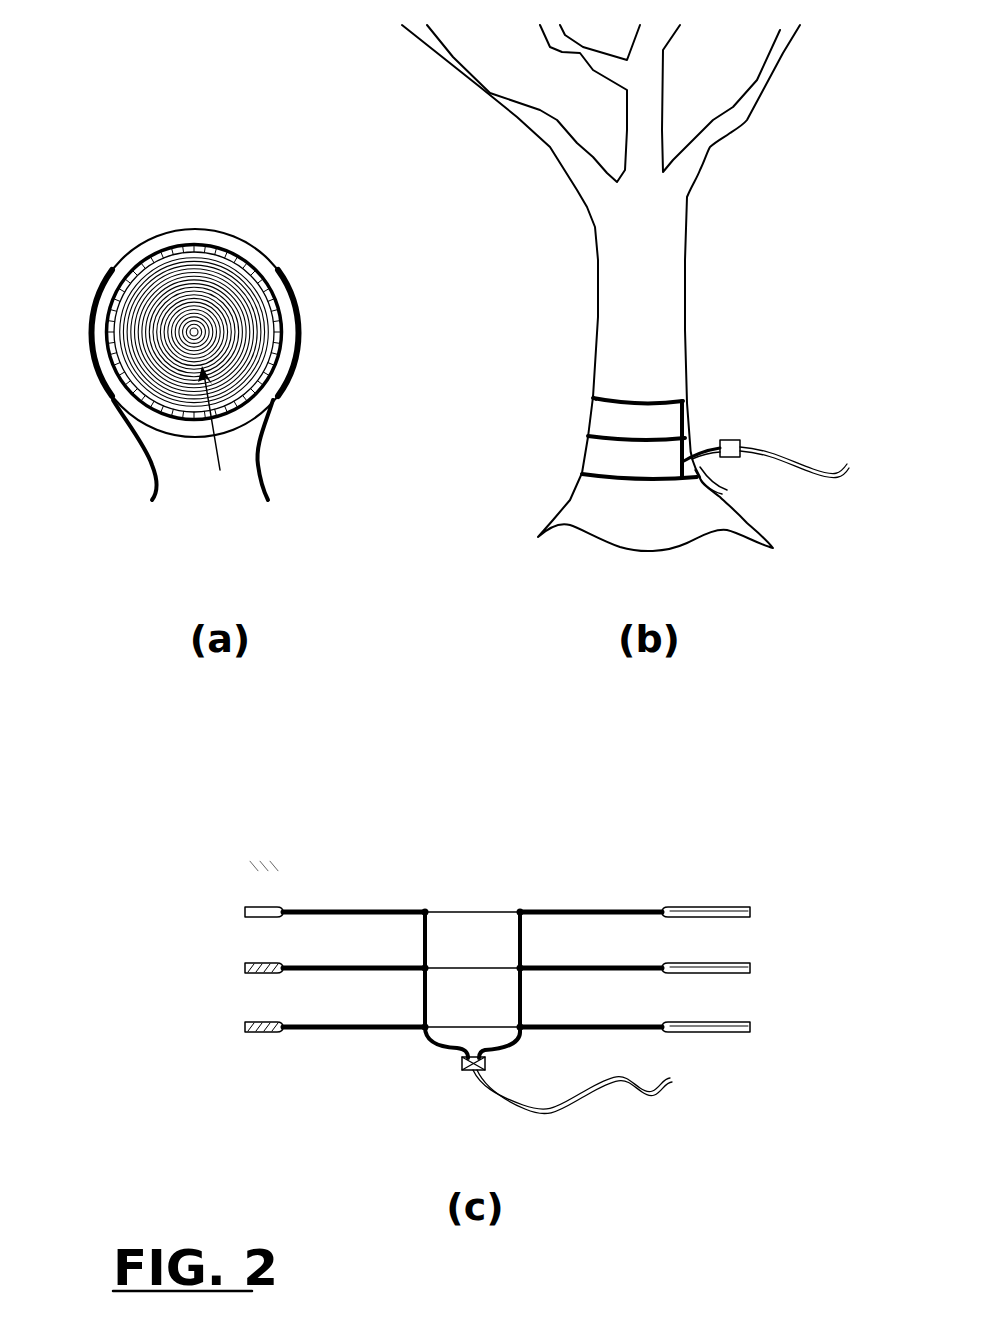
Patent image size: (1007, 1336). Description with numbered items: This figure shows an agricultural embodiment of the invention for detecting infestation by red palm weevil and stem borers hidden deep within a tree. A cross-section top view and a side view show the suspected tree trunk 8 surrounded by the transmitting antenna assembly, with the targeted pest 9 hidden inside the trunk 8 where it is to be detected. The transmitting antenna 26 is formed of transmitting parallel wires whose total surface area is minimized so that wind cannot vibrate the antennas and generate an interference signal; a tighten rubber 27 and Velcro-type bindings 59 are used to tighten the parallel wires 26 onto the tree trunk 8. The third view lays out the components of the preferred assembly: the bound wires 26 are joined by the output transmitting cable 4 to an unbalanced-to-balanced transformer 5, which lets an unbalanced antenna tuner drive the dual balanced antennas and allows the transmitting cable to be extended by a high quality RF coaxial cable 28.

The output transmitting cable 4 is at (152, 468).
The unbalanced-to-balanced transformer 5 is at (727, 440).
The suspected tree trunk 8 is at (227, 253).
The targeted pest 9 is at (209, 436).
The transmitting antenna 26 is at (295, 380).
The tighten rubber 27 is at (185, 440).
The coaxial cable 28 is at (793, 455).
The Velcro type binding 59 is at (178, 230).